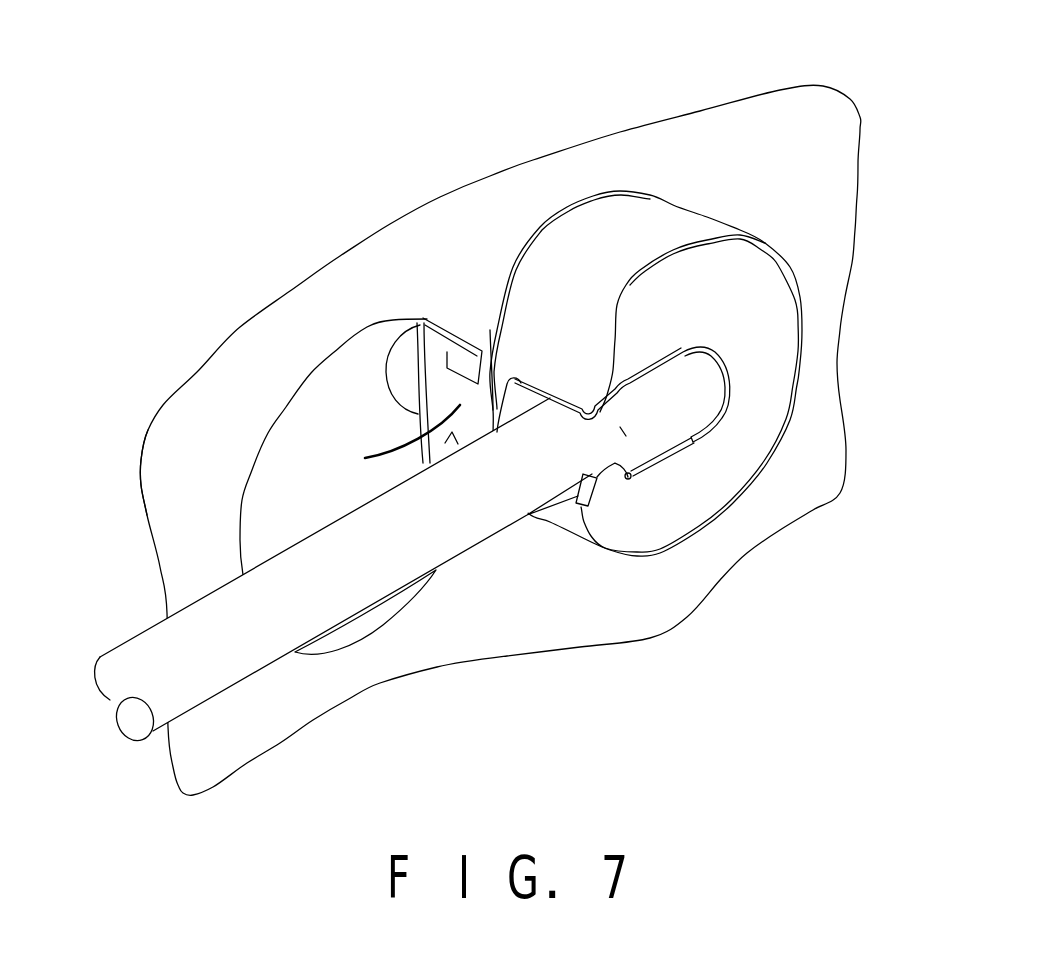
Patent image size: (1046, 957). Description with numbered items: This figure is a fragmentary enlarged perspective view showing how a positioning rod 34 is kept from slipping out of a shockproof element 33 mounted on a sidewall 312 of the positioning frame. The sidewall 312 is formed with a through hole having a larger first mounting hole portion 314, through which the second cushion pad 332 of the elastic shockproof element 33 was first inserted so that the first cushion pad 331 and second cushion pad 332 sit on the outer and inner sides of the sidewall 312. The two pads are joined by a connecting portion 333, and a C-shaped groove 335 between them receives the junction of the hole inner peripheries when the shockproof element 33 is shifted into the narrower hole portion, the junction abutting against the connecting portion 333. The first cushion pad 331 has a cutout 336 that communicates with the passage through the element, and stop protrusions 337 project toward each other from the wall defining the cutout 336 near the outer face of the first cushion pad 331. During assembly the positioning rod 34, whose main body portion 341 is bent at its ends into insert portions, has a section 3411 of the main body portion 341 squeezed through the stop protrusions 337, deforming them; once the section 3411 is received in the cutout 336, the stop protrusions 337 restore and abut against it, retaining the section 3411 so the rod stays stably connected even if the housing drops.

The shockproof element 33 is at (768, 162).
The first cushion pad 331 is at (697, 257).
The sidewall 312 is at (340, 308).
The first mounting hole portion 314 is at (270, 514).
The second cushion pad 332 is at (440, 390).
The connecting portion 333 is at (388, 441).
The C-shaped groove 335 is at (449, 366).
The cutout 336 is at (490, 320).
The stop protrusion 337 is at (617, 320).
The positioning rod 34 is at (535, 568).
The main body portion 341 is at (453, 517).
The section of the main body portion 3411 is at (620, 427).